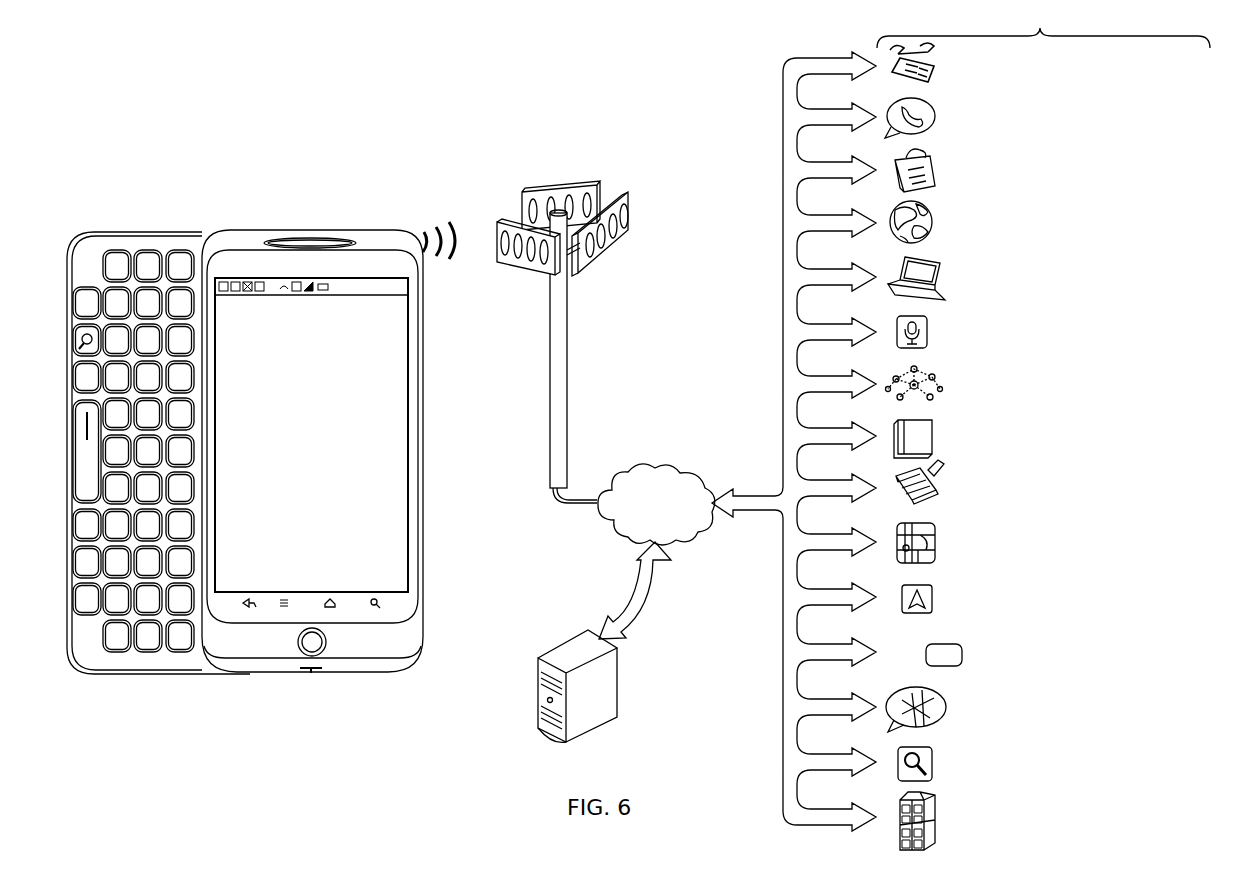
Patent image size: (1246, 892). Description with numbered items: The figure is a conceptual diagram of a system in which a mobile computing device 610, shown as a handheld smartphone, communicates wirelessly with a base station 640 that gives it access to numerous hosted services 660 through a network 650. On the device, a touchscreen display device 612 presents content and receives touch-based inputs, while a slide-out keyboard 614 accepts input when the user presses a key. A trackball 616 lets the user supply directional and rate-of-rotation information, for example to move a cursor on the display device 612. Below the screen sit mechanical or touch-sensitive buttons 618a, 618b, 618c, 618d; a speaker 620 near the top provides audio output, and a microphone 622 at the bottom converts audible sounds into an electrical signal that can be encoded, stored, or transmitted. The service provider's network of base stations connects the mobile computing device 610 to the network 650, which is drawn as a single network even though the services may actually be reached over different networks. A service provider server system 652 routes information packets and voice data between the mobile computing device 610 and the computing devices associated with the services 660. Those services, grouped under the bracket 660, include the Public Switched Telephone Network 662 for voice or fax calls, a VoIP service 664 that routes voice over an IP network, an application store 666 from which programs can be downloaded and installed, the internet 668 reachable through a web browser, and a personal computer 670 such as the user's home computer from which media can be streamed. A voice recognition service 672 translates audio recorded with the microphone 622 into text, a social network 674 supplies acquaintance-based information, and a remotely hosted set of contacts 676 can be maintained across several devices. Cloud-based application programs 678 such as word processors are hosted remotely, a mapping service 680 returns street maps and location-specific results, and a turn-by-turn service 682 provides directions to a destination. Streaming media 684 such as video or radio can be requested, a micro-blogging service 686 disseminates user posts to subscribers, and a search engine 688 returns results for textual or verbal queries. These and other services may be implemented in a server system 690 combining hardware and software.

The mobile computing device 610 is at (366, 172).
The touchscreen display device 612 is at (422, 438).
The keyboard 614 is at (172, 232).
The trackball 616 is at (326, 642).
The button 618a is at (248, 600).
The button 618b is at (285, 598).
The button 618c is at (331, 600).
The button 618d is at (375, 598).
The speaker 620 is at (315, 238).
The microphone 622 is at (311, 672).
The base station 640 is at (608, 163).
The network 650 is at (655, 463).
The server system 652 is at (620, 688).
The hosted services 660 is at (1044, 429).
The Public Switched Telephone Network (PSTN) 662 is at (934, 70).
The Voice over Internet Protocol (VoIP) service 664 is at (935, 121).
The application store 666 is at (935, 174).
The internet 668 is at (935, 227).
The personal computer 670 is at (935, 281).
The voice recognition service 672 is at (935, 329).
The social network 674 is at (936, 375).
The contacts 676 is at (935, 435).
The cloud-based application programs 678 is at (935, 491).
The mapping service 680 is at (935, 533).
The turn-by-turn service 682 is at (935, 589).
The streaming media 684 is at (962, 644).
The micro-blogging service 686 is at (945, 699).
The search engine 688 is at (935, 754).
The server system 690 is at (935, 809).